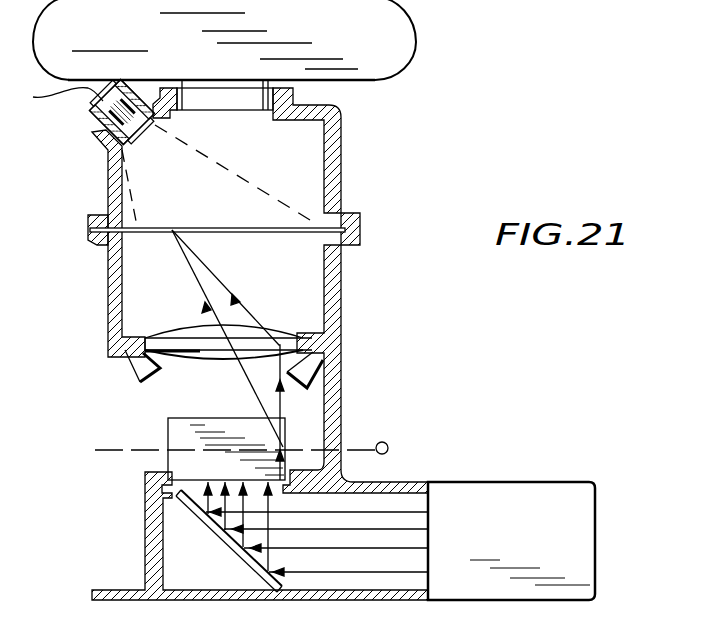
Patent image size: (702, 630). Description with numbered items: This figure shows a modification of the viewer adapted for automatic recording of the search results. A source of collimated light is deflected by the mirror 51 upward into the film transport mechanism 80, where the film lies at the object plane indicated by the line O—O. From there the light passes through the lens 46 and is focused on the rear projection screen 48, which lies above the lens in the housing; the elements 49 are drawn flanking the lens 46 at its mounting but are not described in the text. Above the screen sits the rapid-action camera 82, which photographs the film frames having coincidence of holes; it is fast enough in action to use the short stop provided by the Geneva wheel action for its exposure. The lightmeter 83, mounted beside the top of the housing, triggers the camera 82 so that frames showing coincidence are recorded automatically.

The rapid-action camera 82 is at (416, 40).
The lightmeter 83 is at (105, 139).
The rear projection screen 48 is at (312, 224).
The lens 46 is at (300, 334).
The lens retaining clips 49 is at (137, 367).
The film transport mechanism 80 is at (168, 432).
The mirror 51 is at (463, 490).